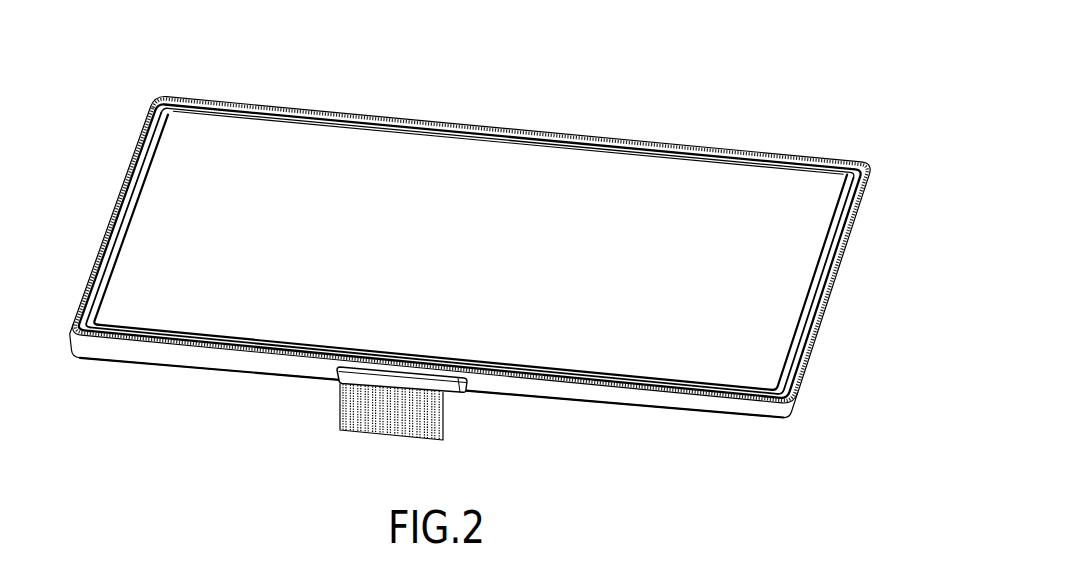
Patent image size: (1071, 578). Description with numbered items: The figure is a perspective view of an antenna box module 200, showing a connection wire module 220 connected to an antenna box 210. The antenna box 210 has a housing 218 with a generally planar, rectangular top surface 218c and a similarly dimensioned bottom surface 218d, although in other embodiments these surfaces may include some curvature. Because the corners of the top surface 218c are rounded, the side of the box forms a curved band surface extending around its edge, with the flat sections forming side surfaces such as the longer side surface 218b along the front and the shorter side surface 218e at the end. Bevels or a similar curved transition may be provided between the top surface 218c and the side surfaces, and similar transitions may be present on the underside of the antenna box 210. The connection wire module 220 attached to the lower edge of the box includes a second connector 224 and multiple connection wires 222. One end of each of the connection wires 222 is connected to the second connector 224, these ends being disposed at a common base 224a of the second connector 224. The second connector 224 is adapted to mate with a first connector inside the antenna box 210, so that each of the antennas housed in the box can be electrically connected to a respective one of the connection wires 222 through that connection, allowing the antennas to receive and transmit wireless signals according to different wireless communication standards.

The antenna box module 200 is at (488, 263).
The antenna box 210 is at (707, 117).
The housing 218 is at (787, 180).
The side surface 218b is at (555, 388).
The top surface 218c is at (557, 197).
The bottom surface 218d is at (105, 368).
The shorter side surface 218e is at (815, 323).
The connection wire module 220 is at (356, 436).
The connection wires 222 is at (345, 413).
The second connector 224 is at (362, 429).
The common base 224a is at (455, 393).